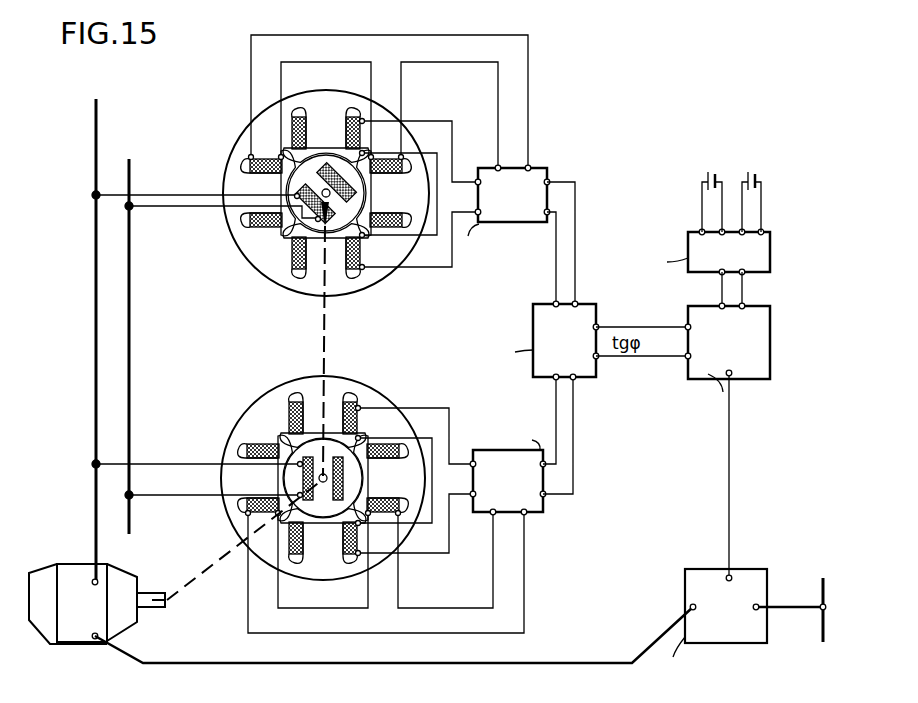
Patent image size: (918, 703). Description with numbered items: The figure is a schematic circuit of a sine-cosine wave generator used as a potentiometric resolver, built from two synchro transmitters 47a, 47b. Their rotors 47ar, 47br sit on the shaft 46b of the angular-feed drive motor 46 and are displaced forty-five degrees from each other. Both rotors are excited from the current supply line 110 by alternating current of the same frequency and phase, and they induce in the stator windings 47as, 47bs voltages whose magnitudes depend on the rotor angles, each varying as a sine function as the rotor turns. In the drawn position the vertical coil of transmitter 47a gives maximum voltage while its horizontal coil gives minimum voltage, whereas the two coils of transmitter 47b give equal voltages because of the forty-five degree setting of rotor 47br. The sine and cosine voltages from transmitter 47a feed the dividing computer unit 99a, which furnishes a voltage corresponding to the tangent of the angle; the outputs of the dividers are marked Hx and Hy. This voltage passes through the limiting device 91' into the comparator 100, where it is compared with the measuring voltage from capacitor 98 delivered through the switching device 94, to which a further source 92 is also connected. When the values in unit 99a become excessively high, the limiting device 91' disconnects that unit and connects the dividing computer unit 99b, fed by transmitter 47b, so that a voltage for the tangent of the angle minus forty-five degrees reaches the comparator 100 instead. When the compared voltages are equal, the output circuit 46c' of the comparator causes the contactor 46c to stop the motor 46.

The angular-feed drive motor 46 is at (43, 573).
The shaft 46b is at (322, 330).
The contactor 46c is at (728, 613).
The output circuit 46c' is at (753, 477).
The synchro transmitter 47a is at (336, 381).
The rotor 47ar is at (306, 445).
The stator windings 47as is at (248, 447).
The synchro transmitter 47b is at (247, 140).
The rotor 47br is at (318, 152).
The stator windings 47bs is at (292, 250).
The limiting device 91' is at (518, 335).
The reference voltage source 92 is at (702, 197).
The switching device 94 is at (768, 246).
The capacitor 98 is at (761, 197).
The dividing computer unit 99a is at (535, 512).
The dividing computer unit 99b is at (537, 169).
The comparator 100 is at (768, 371).
The current supply line 110 is at (128, 393).
The x-component signal Hx is at (573, 493).
The y-component signal Hy is at (557, 209).